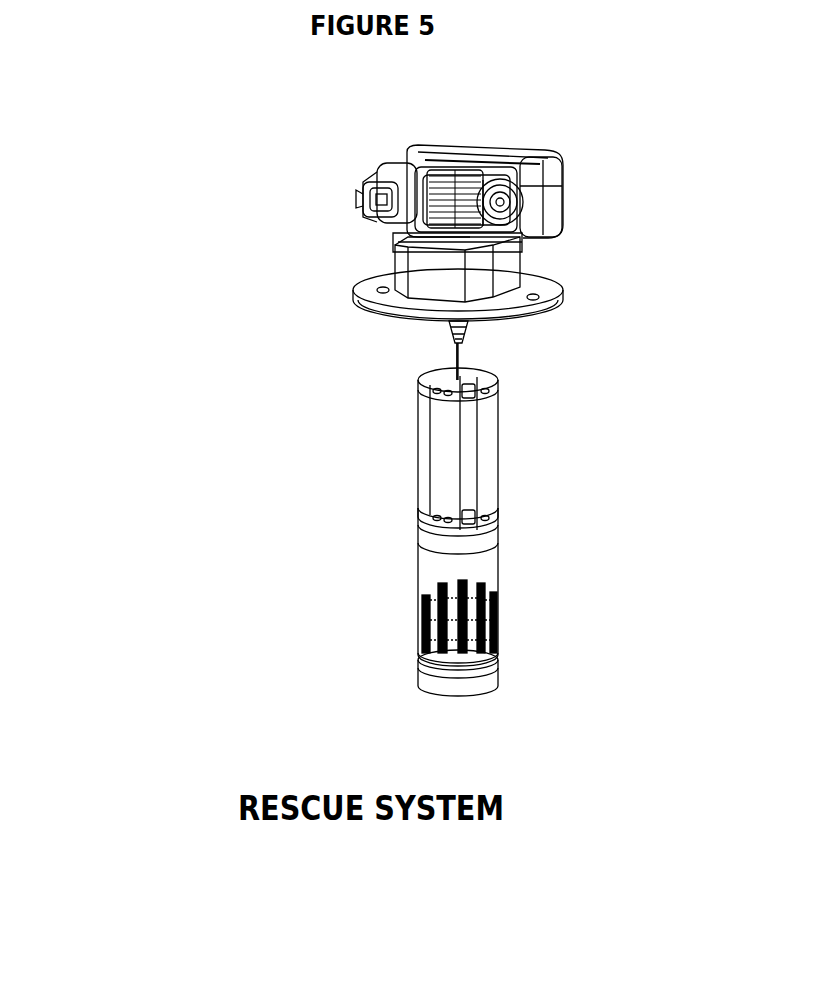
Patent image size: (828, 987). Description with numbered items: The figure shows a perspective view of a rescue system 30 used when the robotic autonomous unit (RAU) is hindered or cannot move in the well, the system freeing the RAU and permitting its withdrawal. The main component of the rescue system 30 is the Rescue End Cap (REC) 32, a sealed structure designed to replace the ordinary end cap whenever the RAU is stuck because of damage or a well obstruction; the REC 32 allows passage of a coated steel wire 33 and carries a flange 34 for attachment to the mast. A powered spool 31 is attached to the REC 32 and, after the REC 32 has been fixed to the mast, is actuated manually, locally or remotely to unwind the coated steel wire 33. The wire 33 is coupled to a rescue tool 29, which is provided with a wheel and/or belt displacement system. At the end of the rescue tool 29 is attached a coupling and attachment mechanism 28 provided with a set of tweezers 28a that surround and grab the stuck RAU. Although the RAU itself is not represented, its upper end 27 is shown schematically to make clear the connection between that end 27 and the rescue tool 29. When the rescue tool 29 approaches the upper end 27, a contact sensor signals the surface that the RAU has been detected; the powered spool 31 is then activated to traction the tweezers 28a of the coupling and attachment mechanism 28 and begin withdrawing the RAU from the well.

The upper end of the RAU 27 is at (497, 673).
The coupling and attachment mechanism 28 is at (423, 578).
The set of tweezers 28a is at (423, 622).
The rescue tool 29 is at (497, 447).
The rescue system 30 is at (297, 418).
The powered spool 31 is at (557, 193).
The Rescue End Cap (REC) 32 is at (393, 272).
The coated steel wire 33 is at (463, 357).
The flange 34 is at (400, 312).